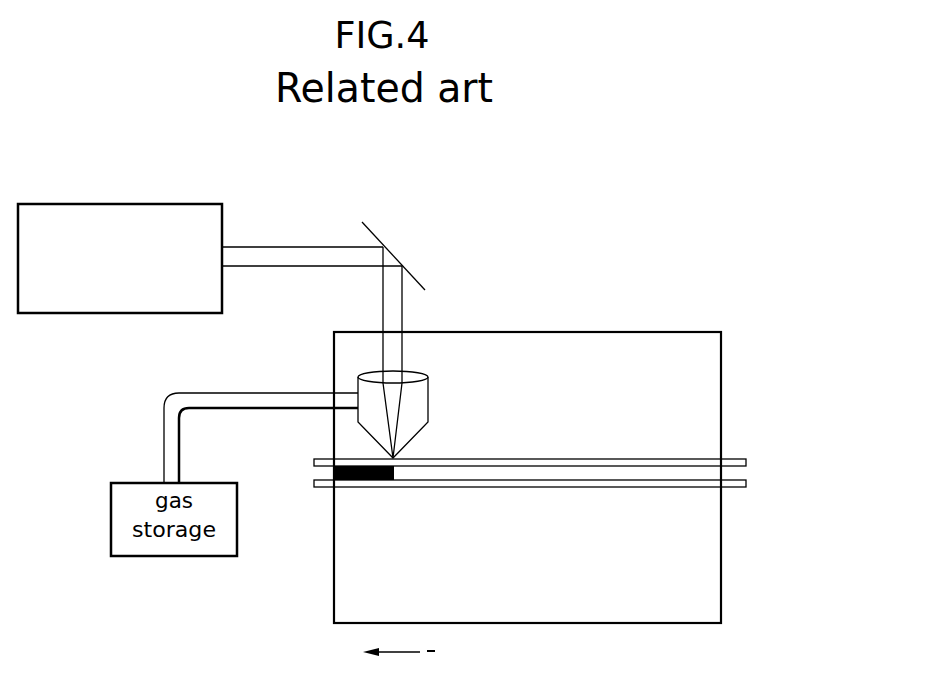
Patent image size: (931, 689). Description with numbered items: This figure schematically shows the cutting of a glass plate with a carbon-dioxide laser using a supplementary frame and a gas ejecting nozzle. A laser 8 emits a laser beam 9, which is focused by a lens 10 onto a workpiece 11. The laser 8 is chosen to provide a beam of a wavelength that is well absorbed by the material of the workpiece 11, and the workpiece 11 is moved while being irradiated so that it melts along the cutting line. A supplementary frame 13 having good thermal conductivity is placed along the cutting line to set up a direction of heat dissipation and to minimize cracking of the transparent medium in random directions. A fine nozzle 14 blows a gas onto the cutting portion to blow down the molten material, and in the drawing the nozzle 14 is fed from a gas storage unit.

The laser 8 is at (125, 204).
The laser beam 9 is at (302, 247).
The lens 10 is at (428, 377).
The workpiece 11 is at (713, 395).
The supplementary frame 13 is at (323, 490).
The fine nozzle 14 is at (420, 430).